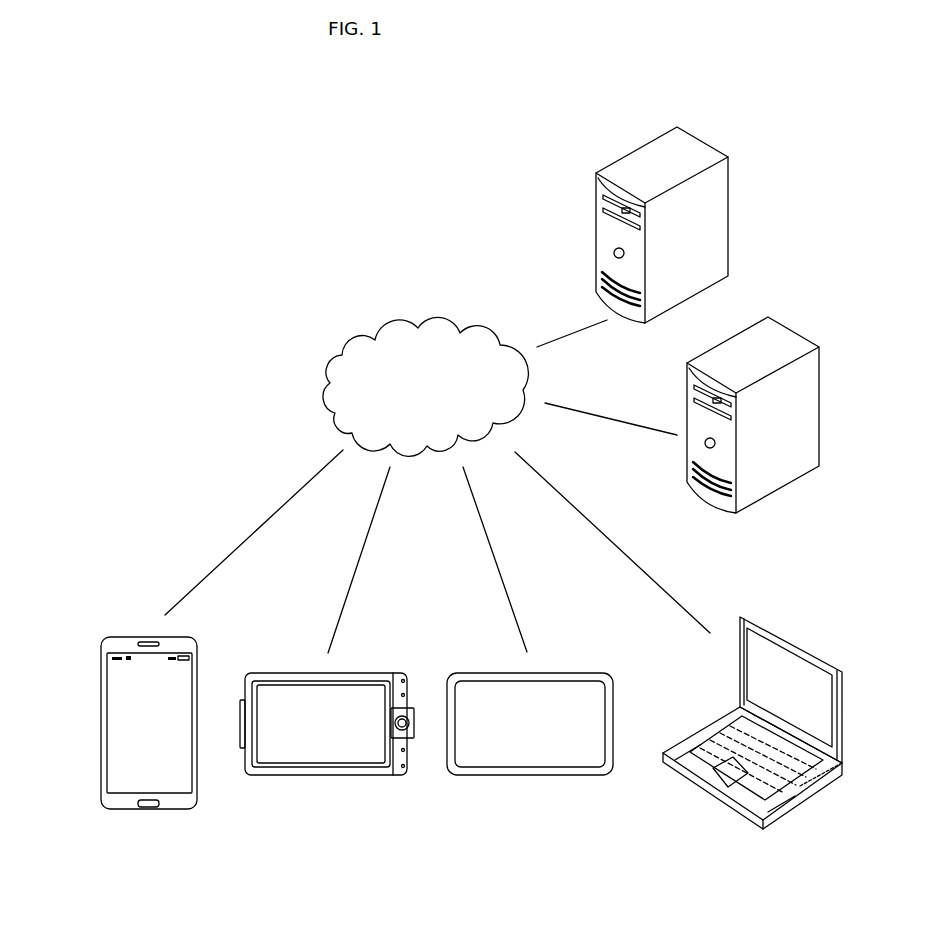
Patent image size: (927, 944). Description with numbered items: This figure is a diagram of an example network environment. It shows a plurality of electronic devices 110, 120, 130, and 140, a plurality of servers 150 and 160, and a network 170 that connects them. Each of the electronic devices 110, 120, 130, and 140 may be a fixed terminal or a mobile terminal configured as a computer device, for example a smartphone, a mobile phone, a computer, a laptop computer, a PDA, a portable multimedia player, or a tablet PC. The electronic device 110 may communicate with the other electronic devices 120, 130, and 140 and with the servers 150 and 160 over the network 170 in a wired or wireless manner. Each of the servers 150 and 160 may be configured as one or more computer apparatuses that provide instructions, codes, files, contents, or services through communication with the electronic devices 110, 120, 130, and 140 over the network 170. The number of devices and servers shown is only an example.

The electronic device 110 is at (149, 812).
The electronic device 120 is at (326, 778).
The electronic device 130 is at (530, 778).
The electronic device 140 is at (843, 718).
The server 150 is at (819, 405).
The server 160 is at (728, 215).
The network 170 is at (435, 318).